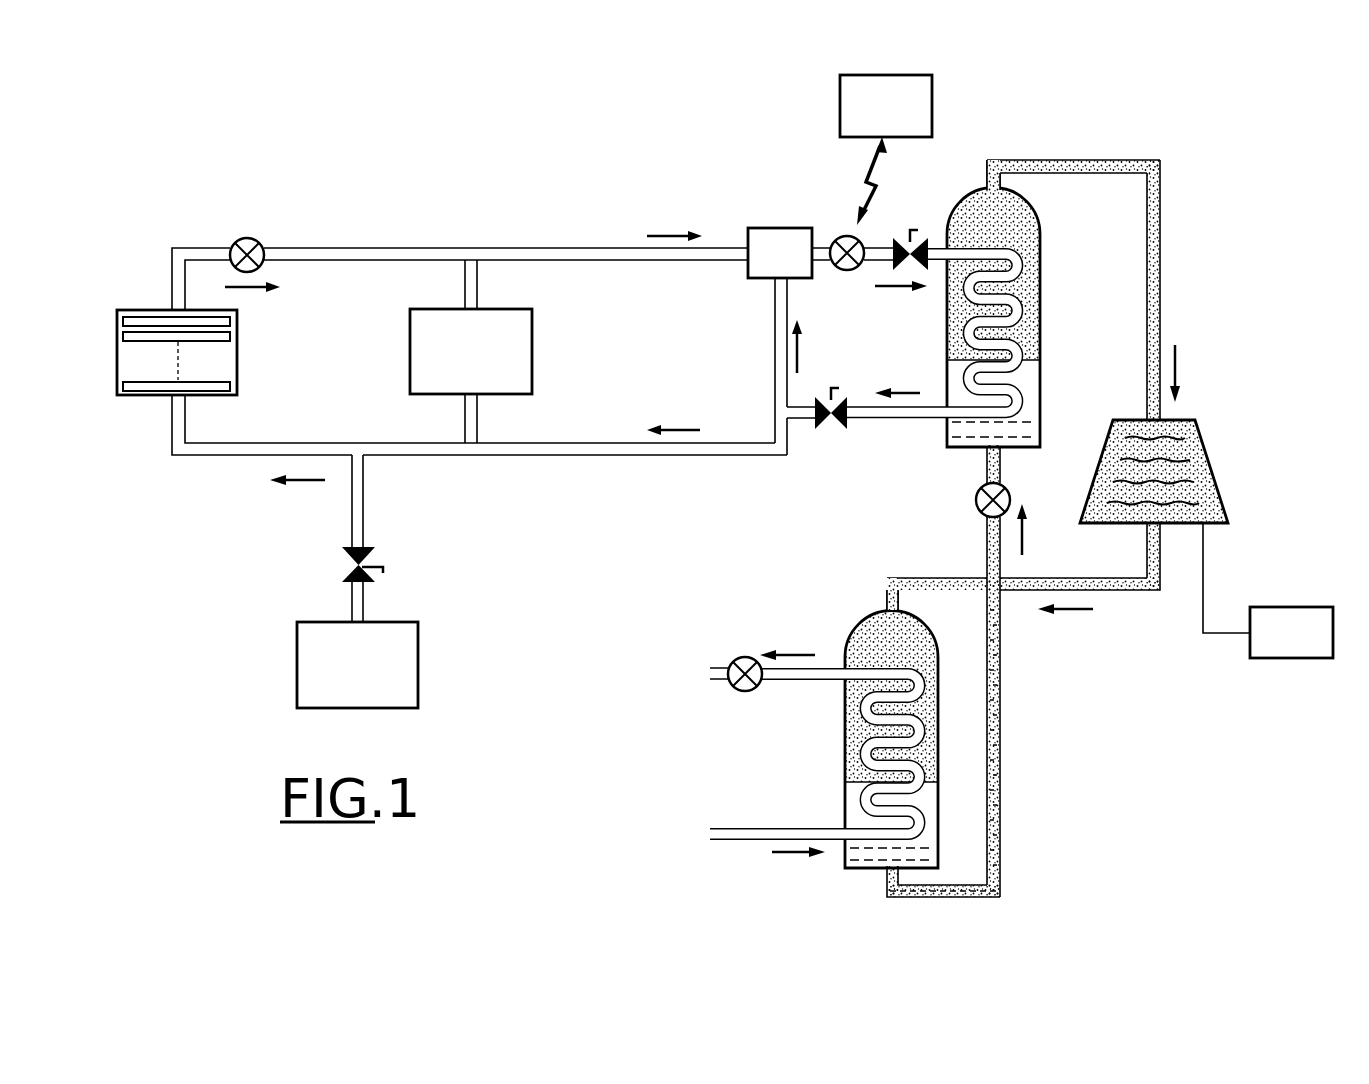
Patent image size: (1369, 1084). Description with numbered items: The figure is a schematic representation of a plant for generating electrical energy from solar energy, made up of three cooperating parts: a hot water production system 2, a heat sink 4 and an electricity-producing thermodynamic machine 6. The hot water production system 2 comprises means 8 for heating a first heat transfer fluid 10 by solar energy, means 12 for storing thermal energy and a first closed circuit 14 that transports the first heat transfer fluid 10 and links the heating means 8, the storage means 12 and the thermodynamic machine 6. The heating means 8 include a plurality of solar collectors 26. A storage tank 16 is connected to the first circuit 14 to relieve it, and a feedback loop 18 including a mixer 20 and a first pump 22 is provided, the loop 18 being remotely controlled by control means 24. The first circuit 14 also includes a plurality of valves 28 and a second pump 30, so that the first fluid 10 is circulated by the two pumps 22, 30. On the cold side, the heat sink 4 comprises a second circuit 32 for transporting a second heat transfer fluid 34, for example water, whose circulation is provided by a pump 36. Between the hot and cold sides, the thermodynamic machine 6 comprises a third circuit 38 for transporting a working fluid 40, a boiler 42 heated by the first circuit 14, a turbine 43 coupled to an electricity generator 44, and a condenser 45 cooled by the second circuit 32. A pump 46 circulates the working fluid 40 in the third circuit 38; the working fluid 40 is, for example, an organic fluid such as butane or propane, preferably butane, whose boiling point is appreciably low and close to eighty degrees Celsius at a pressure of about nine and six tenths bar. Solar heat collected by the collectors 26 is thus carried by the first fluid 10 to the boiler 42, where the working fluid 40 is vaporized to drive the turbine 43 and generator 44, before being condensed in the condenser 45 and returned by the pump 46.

The hot water production system 2 is at (578, 196).
The heat sink 4 is at (706, 754).
The electricity-producing thermodynamic machine 6 is at (1240, 385).
The means for heating 8 is at (143, 396).
The first heat transfer fluid 10 is at (528, 251).
The means for storing thermal energy 12 is at (410, 345).
The first closed circuit 14 is at (684, 458).
The storage tank 16 is at (312, 668).
The feedback loop 18 is at (765, 382).
The mixer 20 is at (780, 228).
The first pump 22 is at (845, 271).
The means for remotely controlling 24 is at (932, 110).
The solar collectors 26 is at (215, 380).
The valves 28 is at (916, 240).
The second pump 30 is at (247, 238).
The second circuit 32 is at (790, 702).
The second heat transfer fluid 34 is at (826, 668).
The pump 36 is at (750, 656).
The third circuit 38 is at (1107, 150).
The working fluid 40 is at (1152, 218).
The boiler 42 is at (1040, 244).
The turbine 43 is at (1222, 478).
The electricity generator 44 is at (1285, 660).
The condenser 45 is at (855, 870).
The pump 46 is at (976, 500).